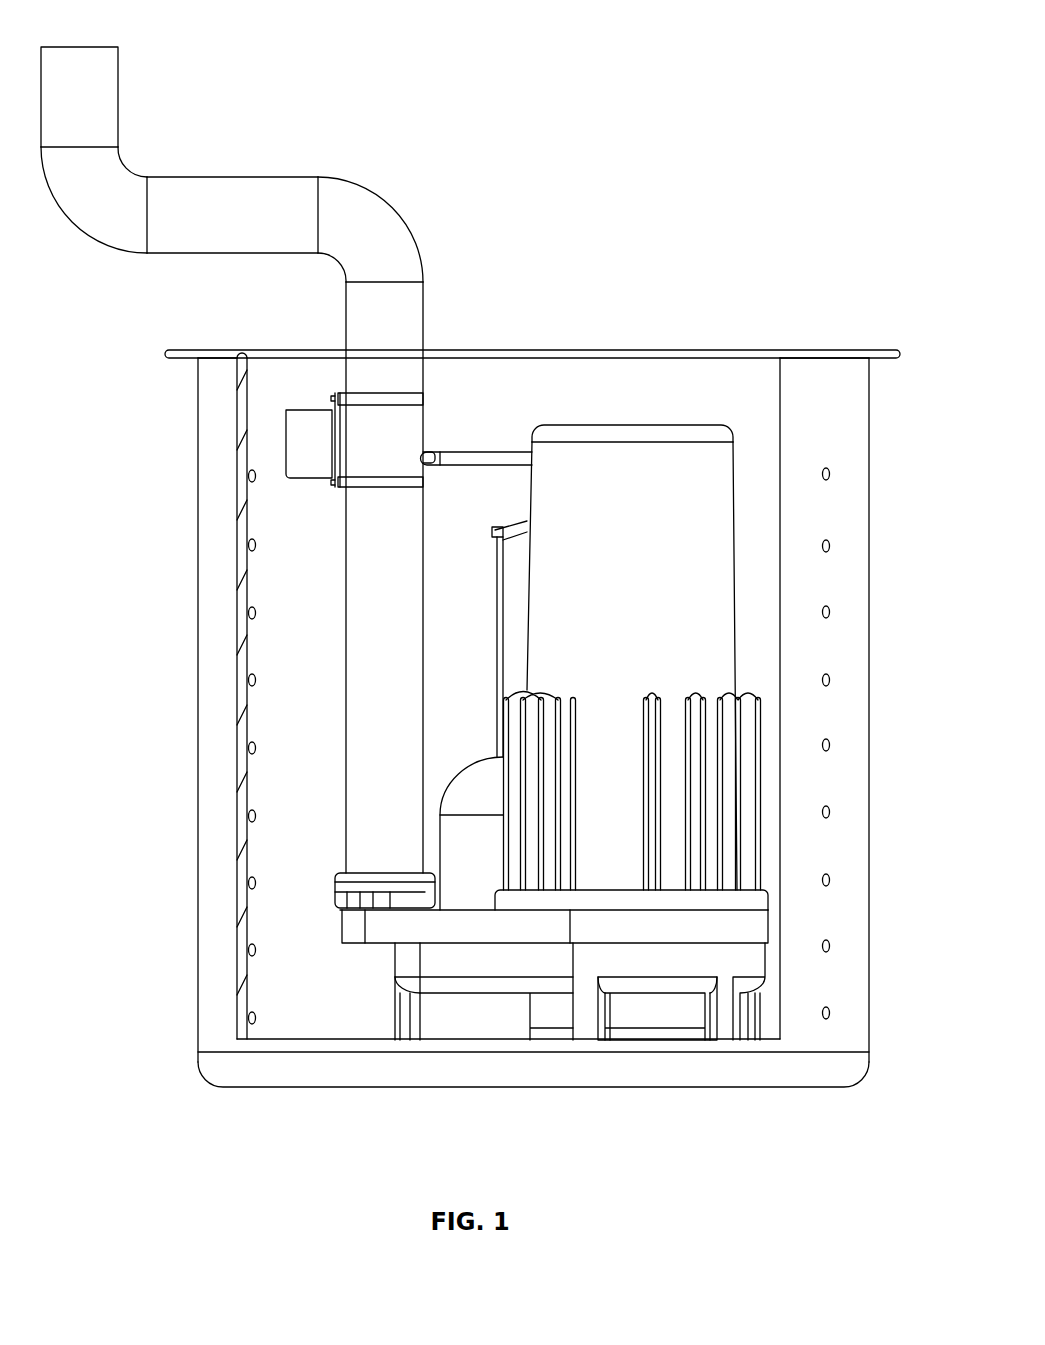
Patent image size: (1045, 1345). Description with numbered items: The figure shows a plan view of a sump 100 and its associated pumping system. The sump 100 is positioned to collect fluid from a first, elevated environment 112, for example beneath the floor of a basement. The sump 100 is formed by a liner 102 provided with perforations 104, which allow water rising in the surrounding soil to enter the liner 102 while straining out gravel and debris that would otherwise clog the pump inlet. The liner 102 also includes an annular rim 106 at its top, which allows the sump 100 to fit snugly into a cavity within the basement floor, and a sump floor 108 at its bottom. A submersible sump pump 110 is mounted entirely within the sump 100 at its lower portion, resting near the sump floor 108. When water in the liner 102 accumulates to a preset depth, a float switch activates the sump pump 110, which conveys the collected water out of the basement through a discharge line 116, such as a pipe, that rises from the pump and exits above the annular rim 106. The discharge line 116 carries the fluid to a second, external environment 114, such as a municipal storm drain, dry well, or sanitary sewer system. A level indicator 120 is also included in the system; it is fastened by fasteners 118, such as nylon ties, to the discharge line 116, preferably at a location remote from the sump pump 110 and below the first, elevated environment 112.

The sump 100 is at (792, 226).
The liner 102 is at (237, 405).
The perforations 104 is at (828, 606).
The annular rim 106 is at (882, 352).
The sump floor 108 is at (228, 1065).
The submersible sump pump 110 is at (615, 455).
The first, elevated environment 112 is at (533, 383).
The second, external environment 114 is at (80, 22).
The discharge line 116 is at (253, 203).
The fasteners 118 is at (413, 400).
The level indicator 120 is at (326, 480).